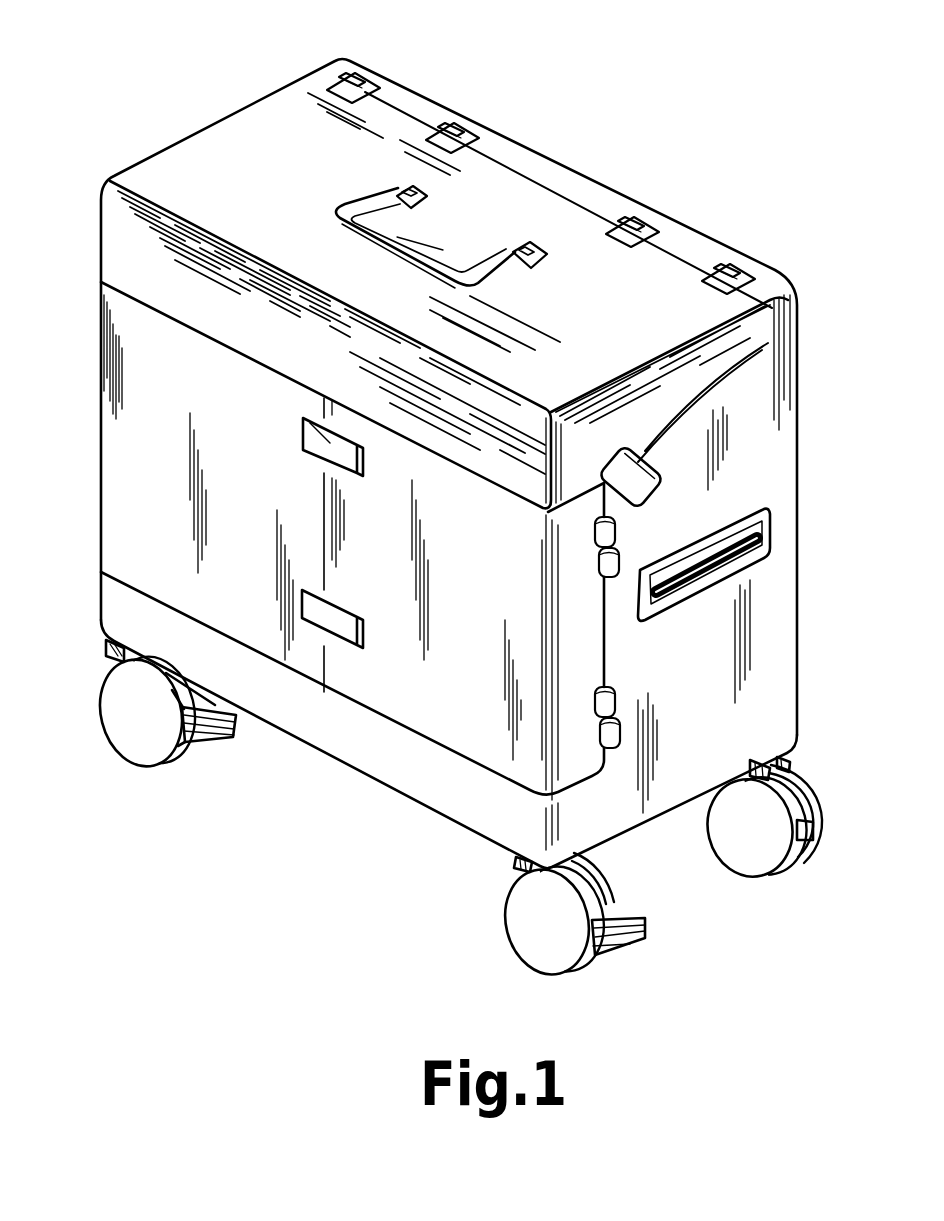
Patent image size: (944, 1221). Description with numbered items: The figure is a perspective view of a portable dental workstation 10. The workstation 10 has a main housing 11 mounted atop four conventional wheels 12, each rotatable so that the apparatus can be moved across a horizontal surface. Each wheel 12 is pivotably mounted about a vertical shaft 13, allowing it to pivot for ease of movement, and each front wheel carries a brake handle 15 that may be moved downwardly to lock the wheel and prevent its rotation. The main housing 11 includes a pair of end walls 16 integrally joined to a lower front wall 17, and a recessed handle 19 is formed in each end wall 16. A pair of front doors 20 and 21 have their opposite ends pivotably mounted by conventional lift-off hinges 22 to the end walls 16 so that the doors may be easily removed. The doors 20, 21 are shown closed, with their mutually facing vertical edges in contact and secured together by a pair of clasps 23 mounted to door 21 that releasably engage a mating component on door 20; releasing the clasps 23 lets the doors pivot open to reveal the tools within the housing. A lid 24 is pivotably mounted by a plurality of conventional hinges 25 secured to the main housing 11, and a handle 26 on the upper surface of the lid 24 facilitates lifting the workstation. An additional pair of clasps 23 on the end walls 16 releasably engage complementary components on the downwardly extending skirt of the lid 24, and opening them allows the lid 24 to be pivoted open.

The workstation 10 is at (612, 150).
The main housing 11 is at (787, 462).
The wheels 12 is at (130, 710).
The vertical shaft 13 is at (110, 652).
The brake handle 15 is at (243, 713).
The end walls 16 is at (767, 670).
The lower front wall 17 is at (492, 812).
The recessed handle 19 is at (768, 530).
The front door 20 is at (158, 463).
The front door 21 is at (427, 698).
The hinges 22 is at (616, 533).
The clasps 23 is at (308, 421).
The lid 24 is at (270, 130).
The hinges 25 is at (366, 78).
The handle 26 is at (512, 248).